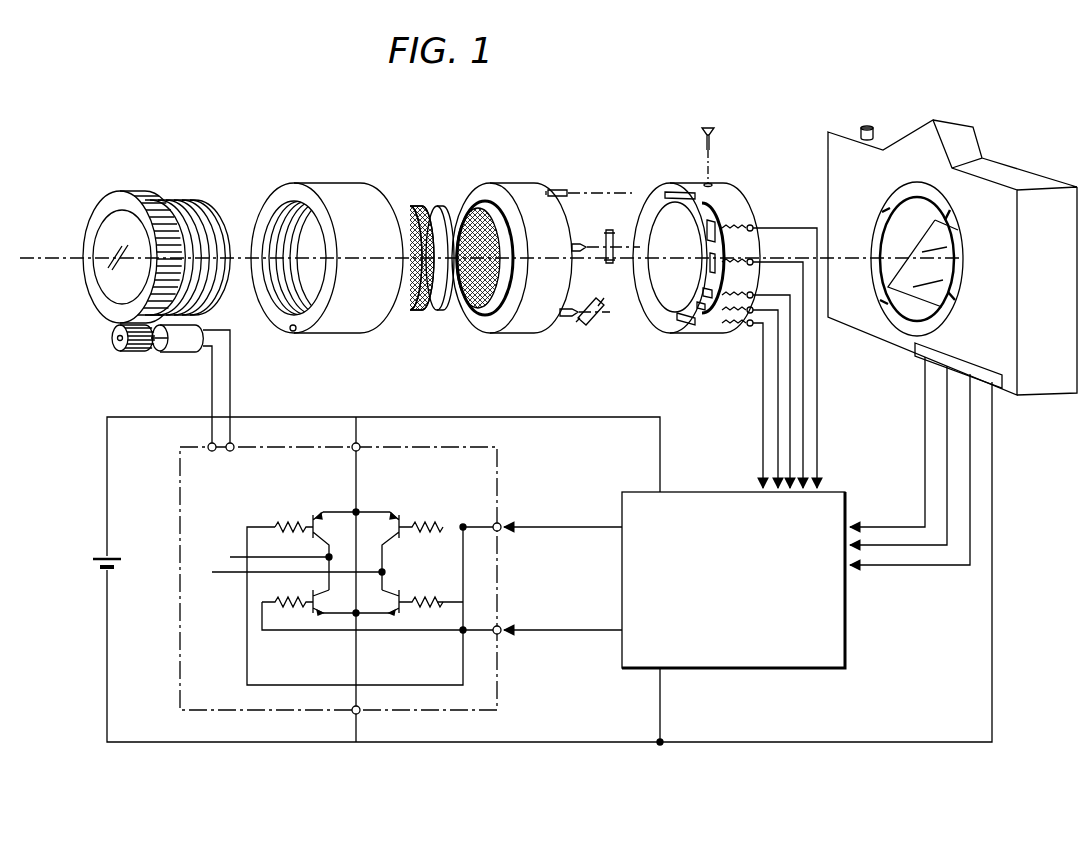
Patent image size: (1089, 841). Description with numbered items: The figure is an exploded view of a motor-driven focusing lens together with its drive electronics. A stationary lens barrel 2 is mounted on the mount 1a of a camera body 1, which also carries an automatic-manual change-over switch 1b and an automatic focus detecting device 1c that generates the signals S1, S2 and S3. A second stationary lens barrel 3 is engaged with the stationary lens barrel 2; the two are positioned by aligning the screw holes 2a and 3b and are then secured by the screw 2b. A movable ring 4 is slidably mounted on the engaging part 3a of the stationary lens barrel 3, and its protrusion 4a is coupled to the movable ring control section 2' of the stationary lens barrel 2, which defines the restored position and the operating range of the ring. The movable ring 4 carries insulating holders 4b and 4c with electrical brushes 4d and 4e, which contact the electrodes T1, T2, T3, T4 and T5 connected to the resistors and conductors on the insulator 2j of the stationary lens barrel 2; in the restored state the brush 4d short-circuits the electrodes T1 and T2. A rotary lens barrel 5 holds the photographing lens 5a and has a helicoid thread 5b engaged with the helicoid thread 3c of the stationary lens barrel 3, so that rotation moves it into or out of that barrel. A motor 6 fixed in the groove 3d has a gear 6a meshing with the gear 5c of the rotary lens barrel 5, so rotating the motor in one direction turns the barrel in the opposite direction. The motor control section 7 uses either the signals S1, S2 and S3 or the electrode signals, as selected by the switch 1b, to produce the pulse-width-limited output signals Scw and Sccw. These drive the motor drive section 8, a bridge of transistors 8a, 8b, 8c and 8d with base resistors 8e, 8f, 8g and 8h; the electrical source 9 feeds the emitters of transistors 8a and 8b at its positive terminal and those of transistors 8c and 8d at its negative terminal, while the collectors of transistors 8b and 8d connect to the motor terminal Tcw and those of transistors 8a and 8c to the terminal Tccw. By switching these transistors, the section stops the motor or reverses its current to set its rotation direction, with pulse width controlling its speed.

The camera body 1 is at (952, 238).
The mount 1a is at (952, 290).
The automatic-manual change-over switch 1b is at (867, 125).
The automatic focus detecting device 1c is at (970, 368).
The stationary lens barrel 2 is at (693, 223).
The movable ring control section 2' is at (675, 163).
The screw hole 2a is at (712, 184).
The screw 2b is at (708, 127).
The insulator 2j is at (668, 327).
The stationary lens barrel 3 is at (327, 246).
The engaging part 3a is at (444, 210).
The screw hole 3b is at (423, 205).
The helicoid thread 3c is at (270, 243).
The groove 3d is at (293, 332).
The movable ring 4 is at (508, 181).
The protrusion 4a is at (556, 189).
The holder 4b is at (580, 243).
The holder 4c is at (568, 318).
The electrical brush 4d is at (610, 230).
The electrical brush 4e is at (592, 326).
The rotary lens barrel 5 is at (136, 229).
The photographing lens 5a is at (118, 232).
The helicoid thread 5b is at (222, 212).
The gear 5c is at (135, 192).
The motor 6 is at (185, 350).
The gear 6a is at (138, 352).
The motor control section 7 is at (848, 656).
The motor drive section 8 is at (361, 579).
The transistor 8a is at (396, 513).
The transistor 8b is at (316, 513).
The transistor 8c is at (380, 628).
The transistor 8d is at (330, 628).
The base resistor 8e is at (425, 522).
The base resistor 8f is at (289, 522).
The base resistor 8g is at (428, 608).
The base resistor 8h is at (290, 608).
The electrical source 9 is at (93, 563).
The electrode T1 is at (754, 225).
The electrode T2 is at (754, 260).
The electrode T3 is at (754, 293).
The electrode T4 is at (751, 314).
The electrode T5 is at (747, 326).
The signal S1 is at (923, 407).
The signal S2 is at (945, 437).
The signal S3 is at (968, 472).
The motor terminal Tcw is at (234, 444).
The motor terminal Tccw is at (209, 444).
The output signal Scw is at (562, 516).
The output signal Sccw is at (564, 620).